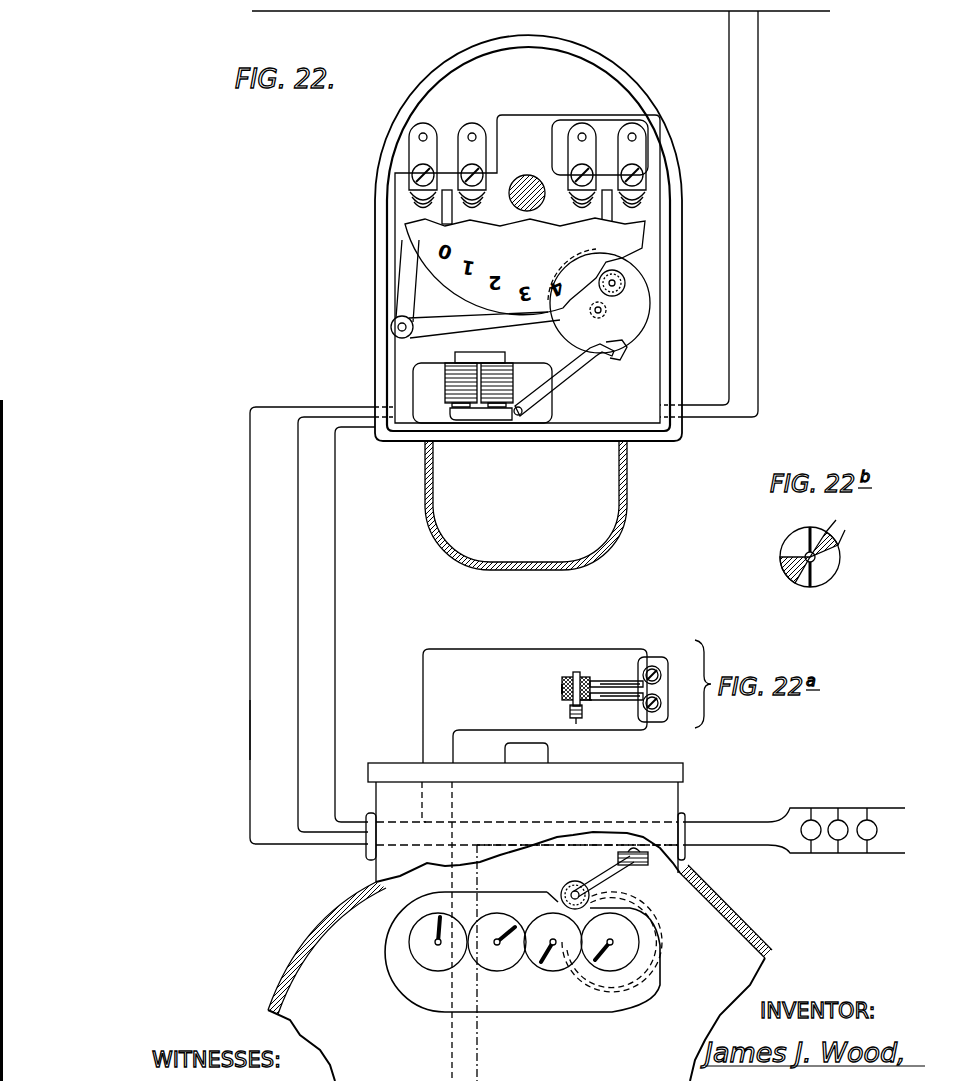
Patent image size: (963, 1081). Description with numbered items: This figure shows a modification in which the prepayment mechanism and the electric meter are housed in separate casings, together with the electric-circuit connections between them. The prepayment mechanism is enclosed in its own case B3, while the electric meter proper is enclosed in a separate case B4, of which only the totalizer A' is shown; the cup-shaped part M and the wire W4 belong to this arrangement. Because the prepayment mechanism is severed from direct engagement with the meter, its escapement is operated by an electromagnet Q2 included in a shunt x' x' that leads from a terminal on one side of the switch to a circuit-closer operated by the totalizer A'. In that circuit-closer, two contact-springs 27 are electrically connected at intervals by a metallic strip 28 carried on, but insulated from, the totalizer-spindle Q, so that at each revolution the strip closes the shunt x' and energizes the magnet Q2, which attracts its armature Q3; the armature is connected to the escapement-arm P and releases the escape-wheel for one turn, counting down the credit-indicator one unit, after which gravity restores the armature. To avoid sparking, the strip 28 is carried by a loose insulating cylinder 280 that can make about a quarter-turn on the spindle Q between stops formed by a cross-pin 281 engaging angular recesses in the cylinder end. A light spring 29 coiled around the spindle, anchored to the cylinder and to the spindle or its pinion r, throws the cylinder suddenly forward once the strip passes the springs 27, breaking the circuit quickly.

In FIG. 22, the case B3 is at (518, 238).
In FIG. 22, the motor or magnet cup M is at (526, 505).
In FIG. 22, the shunt x' is at (465, 744).
In FIG. 22A, the shunt x' is at (547, 660).
In FIG. 22, the electromagnet Q2 is at (498, 352).
In FIG. 22, the armature Q3 is at (478, 420).
In FIG. 22, the escapement-arm P is at (560, 385).
In FIG. 22, the wire W4 is at (232, 744).
In FIG. 22, the totalizer A' is at (635, 894).
In FIG. 22, the case B4 is at (520, 973).
In FIG. 22, the metallic strip 28 is at (566, 893).
In FIG. 22A, the metallic strip 28 is at (592, 702).
In FIG. 22, the contact-springs 27 is at (604, 876).
In FIG. 22A, the contact-springs 27 is at (624, 704).
In FIG. 22, the totalizer-spindle Q is at (590, 890).
In FIG. 22A, the totalizer-spindle Q is at (572, 674).
In FIG. 22B, the totalizer-spindle Q is at (805, 557).
In FIG. 22A, the cylinder 280 is at (562, 688).
In FIG. 22B, the cylinder 280 is at (832, 555).
In FIG. 22B, the cross-pin 281 is at (796, 578).
In FIG. 22A, the spring 29 is at (570, 704).
In FIG. 22A, the pinion r is at (562, 718).